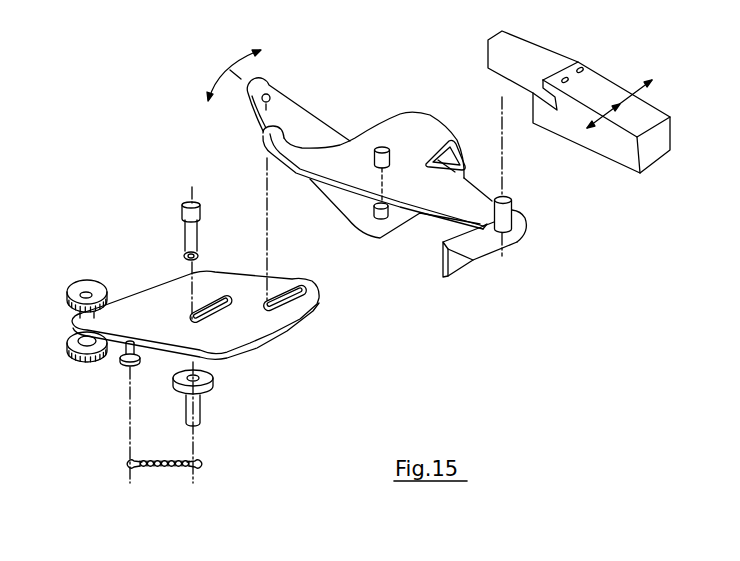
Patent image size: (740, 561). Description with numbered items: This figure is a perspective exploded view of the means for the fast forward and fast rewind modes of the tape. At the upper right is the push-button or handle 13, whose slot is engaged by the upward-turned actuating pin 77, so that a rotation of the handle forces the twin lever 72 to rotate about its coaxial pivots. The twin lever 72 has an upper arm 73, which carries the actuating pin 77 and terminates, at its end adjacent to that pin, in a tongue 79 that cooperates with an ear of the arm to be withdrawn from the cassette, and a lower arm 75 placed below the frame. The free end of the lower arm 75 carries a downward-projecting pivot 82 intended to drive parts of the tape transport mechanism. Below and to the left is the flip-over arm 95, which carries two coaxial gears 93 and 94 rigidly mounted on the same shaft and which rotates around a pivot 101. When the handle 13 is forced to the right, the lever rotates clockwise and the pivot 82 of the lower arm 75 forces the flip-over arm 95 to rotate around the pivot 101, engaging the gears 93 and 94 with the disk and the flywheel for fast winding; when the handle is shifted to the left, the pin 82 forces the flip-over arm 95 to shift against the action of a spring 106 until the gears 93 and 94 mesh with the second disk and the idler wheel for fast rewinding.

The push-button or handle 13 is at (593, 82).
The twin lever 72 is at (436, 104).
The upper arm 73 is at (445, 203).
The lower arm 75 is at (315, 125).
The actuating pin 77 is at (517, 211).
The tongue 79 is at (470, 263).
The pivot 82 is at (257, 135).
The gear 93 is at (72, 288).
The gear 94 is at (73, 356).
The flip-over arm 95 is at (143, 297).
The pivot 101 is at (200, 241).
The spring 106 is at (173, 470).